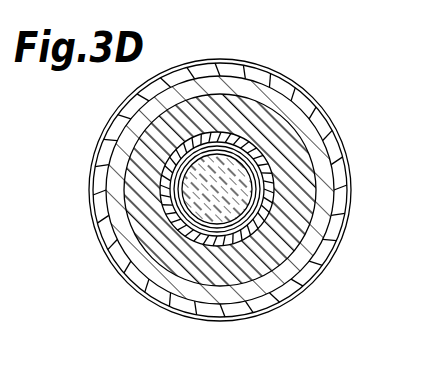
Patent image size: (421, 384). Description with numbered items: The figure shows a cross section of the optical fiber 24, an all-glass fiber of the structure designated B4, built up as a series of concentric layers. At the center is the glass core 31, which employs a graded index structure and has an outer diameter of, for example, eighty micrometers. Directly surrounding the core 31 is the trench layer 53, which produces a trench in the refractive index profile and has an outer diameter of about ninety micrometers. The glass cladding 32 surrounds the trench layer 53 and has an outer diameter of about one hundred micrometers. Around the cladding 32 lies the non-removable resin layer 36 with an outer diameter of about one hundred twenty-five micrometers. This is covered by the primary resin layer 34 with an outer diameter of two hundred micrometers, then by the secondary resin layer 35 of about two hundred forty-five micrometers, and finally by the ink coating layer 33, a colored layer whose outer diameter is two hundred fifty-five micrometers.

The optical fiber 24 is at (300, 78).
The core 31 is at (240, 204).
The cladding 32 is at (183, 228).
The ink coating layer 33 is at (288, 297).
The primary resin layer 34 is at (297, 160).
The secondary resin layer 35 is at (115, 185).
The non-removable resin layer 36 is at (275, 222).
The trench layer 53 is at (250, 153).